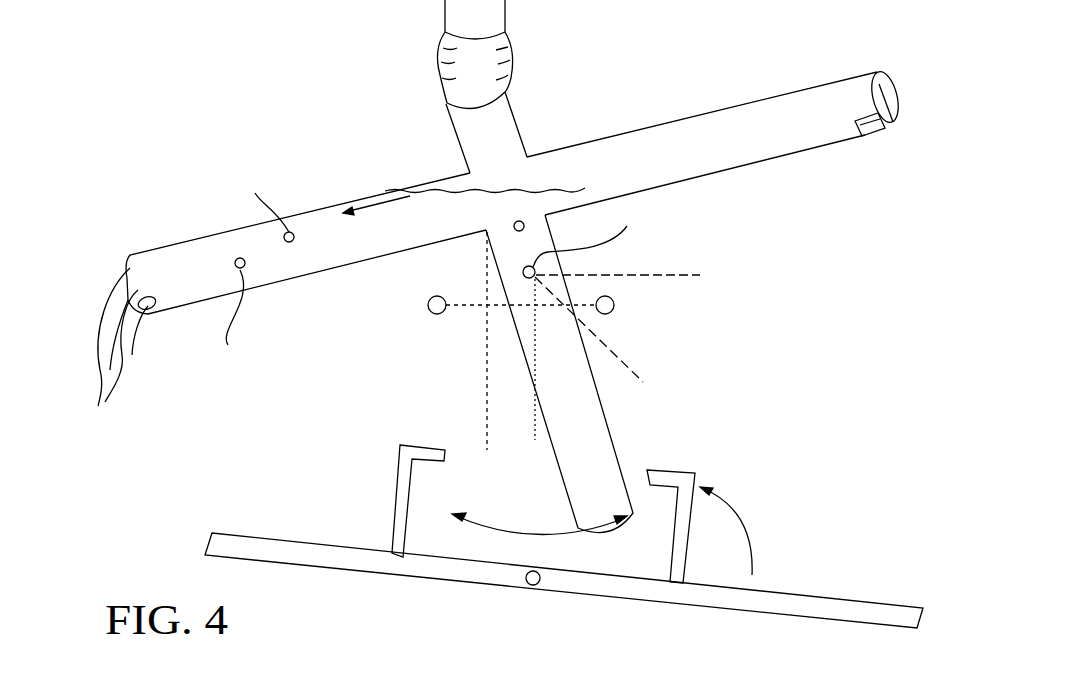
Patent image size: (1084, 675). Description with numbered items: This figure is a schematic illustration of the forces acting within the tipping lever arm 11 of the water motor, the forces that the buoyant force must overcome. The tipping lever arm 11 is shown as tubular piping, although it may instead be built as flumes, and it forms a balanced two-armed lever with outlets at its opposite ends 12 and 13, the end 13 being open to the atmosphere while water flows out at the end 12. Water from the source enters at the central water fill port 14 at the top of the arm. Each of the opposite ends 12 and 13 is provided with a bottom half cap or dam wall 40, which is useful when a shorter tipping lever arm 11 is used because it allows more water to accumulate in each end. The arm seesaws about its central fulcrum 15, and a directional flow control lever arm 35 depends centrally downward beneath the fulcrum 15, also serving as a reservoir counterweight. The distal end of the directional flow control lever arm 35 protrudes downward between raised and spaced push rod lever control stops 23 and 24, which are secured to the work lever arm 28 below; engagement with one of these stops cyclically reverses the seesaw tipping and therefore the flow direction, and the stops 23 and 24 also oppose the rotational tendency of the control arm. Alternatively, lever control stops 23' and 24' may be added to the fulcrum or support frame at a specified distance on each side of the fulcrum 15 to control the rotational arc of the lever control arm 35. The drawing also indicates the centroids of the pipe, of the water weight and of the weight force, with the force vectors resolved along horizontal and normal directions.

The tipping lever arm 11 is at (695, 118).
The outlet end of tipping lever arm 12 is at (128, 272).
The outlet end of tipping lever arm 13 is at (893, 72).
The central water fill port 14 is at (440, 90).
The central fulcrum 15 is at (488, 239).
The push rod lever control stop 23 is at (497, 479).
The push rod lever control stop 24 is at (701, 516).
The lever control stop 23' is at (468, 315).
The lever control stop 24' is at (649, 309).
The work lever arm 28 is at (832, 598).
The directional flow control lever arm 35 is at (530, 373).
The dam wall 40 is at (897, 122).